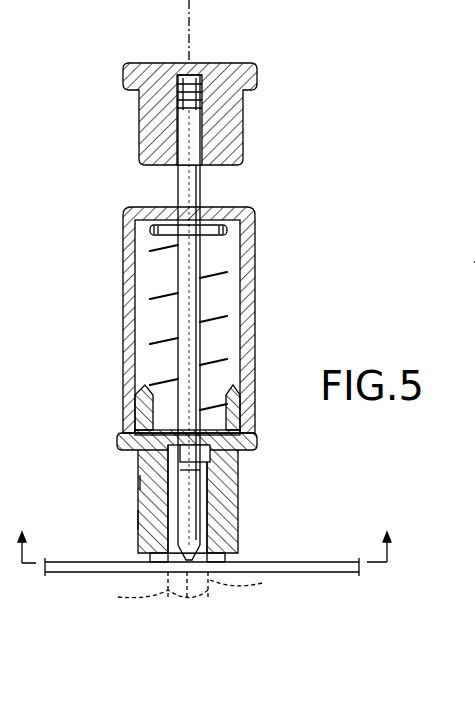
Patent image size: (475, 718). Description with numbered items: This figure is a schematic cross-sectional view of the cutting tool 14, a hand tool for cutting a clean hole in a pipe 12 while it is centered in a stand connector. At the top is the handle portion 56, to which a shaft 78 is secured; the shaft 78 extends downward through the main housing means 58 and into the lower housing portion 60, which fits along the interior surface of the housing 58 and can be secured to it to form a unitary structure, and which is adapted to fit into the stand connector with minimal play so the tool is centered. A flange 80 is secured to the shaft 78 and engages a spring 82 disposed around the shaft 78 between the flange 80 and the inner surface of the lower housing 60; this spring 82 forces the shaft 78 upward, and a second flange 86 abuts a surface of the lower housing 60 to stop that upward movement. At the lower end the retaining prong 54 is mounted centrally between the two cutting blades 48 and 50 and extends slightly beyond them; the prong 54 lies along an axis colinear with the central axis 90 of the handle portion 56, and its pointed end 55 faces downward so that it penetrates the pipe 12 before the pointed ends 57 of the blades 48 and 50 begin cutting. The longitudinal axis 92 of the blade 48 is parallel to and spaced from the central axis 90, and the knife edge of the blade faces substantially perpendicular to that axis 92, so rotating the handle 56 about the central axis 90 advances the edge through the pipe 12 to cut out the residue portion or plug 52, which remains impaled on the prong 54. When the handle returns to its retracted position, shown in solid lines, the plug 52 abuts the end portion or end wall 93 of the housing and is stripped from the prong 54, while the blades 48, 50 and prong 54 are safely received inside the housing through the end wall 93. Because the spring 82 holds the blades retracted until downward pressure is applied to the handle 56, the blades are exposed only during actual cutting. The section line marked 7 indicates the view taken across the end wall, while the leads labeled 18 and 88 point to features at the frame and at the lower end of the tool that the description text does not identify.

The section line 7- 7 is at (208, 535).
The pipe 12 is at (317, 563).
The cutting tool 14 is at (257, 281).
The machine frame 18 is at (474, 263).
The blade 48 is at (245, 500).
The blade 50 is at (137, 518).
The residue portion or plug 52 is at (240, 522).
The retaining prong 54 is at (140, 480).
The pointed end 55 is at (118, 598).
The handle portion 56 is at (243, 114).
The pointed end 57 is at (262, 583).
The housing means 58 is at (255, 321).
The lower housing portion 60 is at (238, 471).
The shaft 78 is at (200, 188).
The flange 80 is at (227, 231).
The spring 82 is at (135, 297).
The flange 86 is at (140, 458).
The nozzle tip 88 is at (225, 553).
The central axis 90 is at (189, 13).
The longitudinal axis 92 is at (213, 598).
The end portion or end wall 93 is at (140, 543).